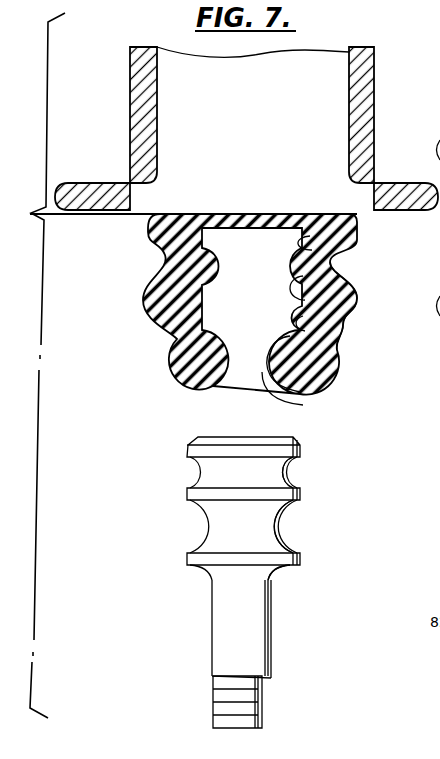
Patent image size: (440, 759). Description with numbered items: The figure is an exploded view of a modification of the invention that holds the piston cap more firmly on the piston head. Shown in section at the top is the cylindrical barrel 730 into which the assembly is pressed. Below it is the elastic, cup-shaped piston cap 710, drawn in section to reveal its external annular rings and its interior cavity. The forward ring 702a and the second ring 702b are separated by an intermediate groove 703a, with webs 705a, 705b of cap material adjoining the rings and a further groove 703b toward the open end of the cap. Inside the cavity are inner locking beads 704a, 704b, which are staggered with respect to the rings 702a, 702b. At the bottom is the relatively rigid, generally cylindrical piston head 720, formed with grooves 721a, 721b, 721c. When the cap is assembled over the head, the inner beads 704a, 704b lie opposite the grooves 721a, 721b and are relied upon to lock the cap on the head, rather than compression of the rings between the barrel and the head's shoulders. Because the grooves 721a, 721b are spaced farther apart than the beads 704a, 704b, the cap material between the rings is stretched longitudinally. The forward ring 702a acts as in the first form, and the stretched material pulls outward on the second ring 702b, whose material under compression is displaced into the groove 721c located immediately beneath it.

The cylindrical barrel 730 is at (349, 118).
The piston cap 710 is at (264, 279).
The forward ring 702a is at (356, 237).
The web 705a is at (342, 256).
The intermediate groove 703a is at (330, 268).
The inner locking bead 704a is at (352, 303).
The second ring 702b is at (352, 324).
The web 705b is at (335, 346).
The groove 703b is at (336, 366).
The inner locking bead 704b is at (301, 391).
The piston head 720 is at (258, 602).
The groove 721a is at (290, 478).
The groove 721c is at (281, 537).
The groove 721b is at (272, 572).